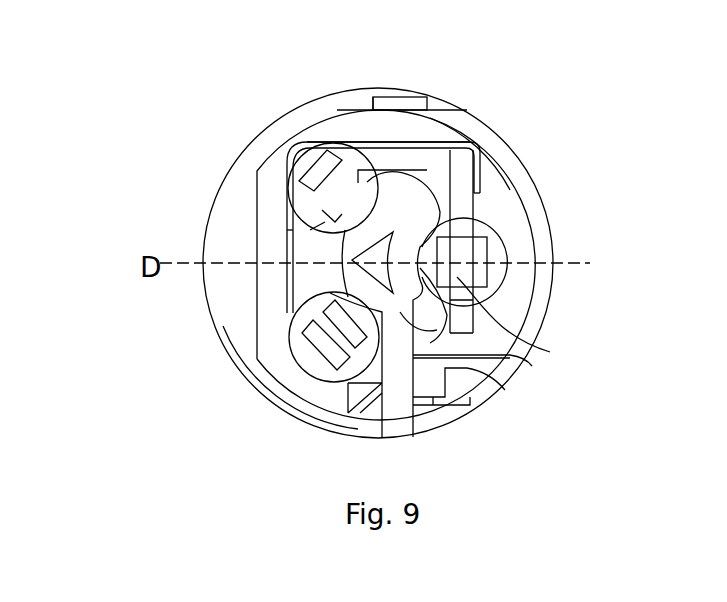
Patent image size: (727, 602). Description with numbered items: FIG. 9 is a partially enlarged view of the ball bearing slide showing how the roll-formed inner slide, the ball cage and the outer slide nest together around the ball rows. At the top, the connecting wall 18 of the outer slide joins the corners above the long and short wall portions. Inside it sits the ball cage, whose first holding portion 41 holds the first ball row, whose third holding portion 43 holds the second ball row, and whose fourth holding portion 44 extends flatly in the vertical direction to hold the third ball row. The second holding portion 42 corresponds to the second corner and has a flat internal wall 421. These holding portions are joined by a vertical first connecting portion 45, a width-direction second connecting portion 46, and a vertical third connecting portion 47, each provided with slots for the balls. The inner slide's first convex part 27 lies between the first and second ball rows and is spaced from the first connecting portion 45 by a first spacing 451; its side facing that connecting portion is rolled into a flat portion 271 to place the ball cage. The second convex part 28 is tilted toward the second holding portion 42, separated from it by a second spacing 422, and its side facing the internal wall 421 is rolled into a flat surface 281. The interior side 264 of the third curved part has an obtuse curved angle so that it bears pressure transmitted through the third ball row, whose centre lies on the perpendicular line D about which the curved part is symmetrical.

The connecting wall 18 is at (389, 110).
The first convex part 27 is at (335, 252).
The second convex part 28 is at (413, 210).
The first holding portion 41 is at (335, 195).
The second holding portion 42 is at (465, 165).
The third holding portion 43 is at (327, 333).
The fourth holding portion 44 is at (520, 305).
The first connecting portion 45 is at (290, 258).
The second connecting portion 46 is at (377, 170).
The third connecting portion 47 is at (458, 230).
The interior side 264 is at (440, 290).
The flat portion 271 is at (325, 258).
The flat surface 281 is at (372, 97).
The internal wall 421 is at (448, 165).
The second spacing 422 is at (388, 160).
The first spacing 451 is at (318, 262).